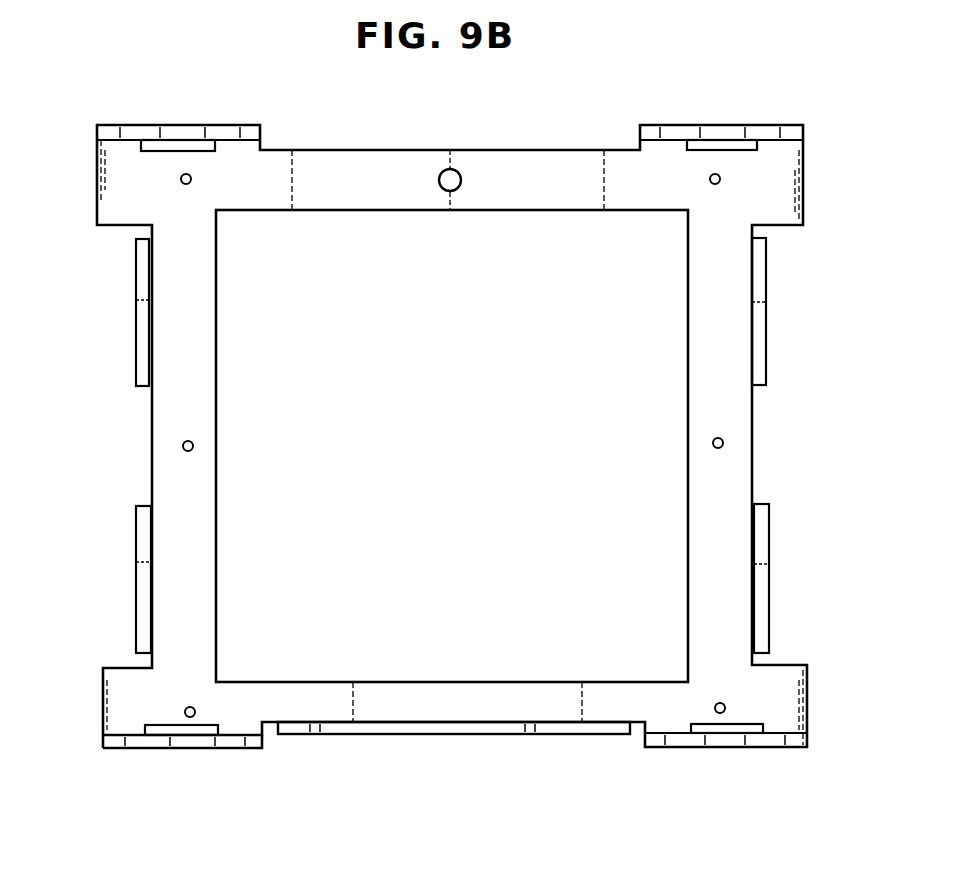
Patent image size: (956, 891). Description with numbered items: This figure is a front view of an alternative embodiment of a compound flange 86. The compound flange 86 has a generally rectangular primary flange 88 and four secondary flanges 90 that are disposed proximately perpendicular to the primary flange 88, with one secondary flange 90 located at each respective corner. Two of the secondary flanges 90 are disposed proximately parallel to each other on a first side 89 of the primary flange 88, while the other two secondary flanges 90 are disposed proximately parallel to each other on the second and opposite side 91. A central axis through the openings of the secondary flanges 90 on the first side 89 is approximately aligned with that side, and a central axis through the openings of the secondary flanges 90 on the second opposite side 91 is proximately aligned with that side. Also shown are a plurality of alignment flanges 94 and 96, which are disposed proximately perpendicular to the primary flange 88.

The compound flange 86 is at (628, 90).
The primary flange 88 is at (502, 170).
The first side 89 is at (163, 470).
The secondary flange 90 is at (127, 125).
The second opposite side 91 is at (742, 465).
The alignment flange 94 is at (140, 325).
The alignment flange 96 is at (455, 740).